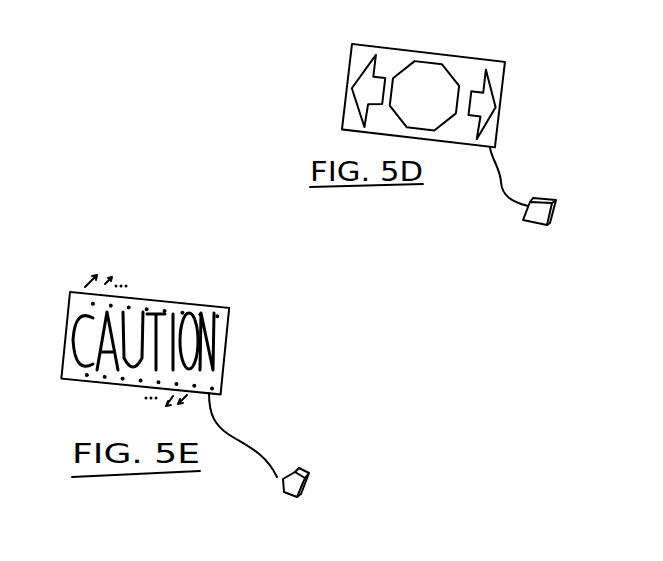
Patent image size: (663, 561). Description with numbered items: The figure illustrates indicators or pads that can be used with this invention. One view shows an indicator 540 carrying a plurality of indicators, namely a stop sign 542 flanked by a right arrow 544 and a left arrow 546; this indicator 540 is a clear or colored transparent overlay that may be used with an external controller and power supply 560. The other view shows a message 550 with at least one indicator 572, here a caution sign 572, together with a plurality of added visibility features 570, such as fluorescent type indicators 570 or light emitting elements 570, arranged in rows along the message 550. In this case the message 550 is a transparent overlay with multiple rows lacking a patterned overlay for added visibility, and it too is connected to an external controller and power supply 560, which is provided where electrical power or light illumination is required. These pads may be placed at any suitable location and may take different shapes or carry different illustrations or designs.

In FIG. 5D, the indicator 540 is at (402, 48).
In FIG. 5D, the stop sign 542 is at (427, 130).
In FIG. 5D, the right arrow 544 is at (497, 122).
In FIG. 5D, the left arrow 546 is at (352, 90).
In FIG. 5D, the external controller and power supply 560 is at (555, 212).
In FIG. 5E, the external controller and power supply 560 is at (308, 494).
In FIG. 5E, the message 550 is at (170, 302).
In FIG. 5E, the added visibility features 570 is at (82, 302).
In FIG. 5E, the indicator 572 is at (213, 362).